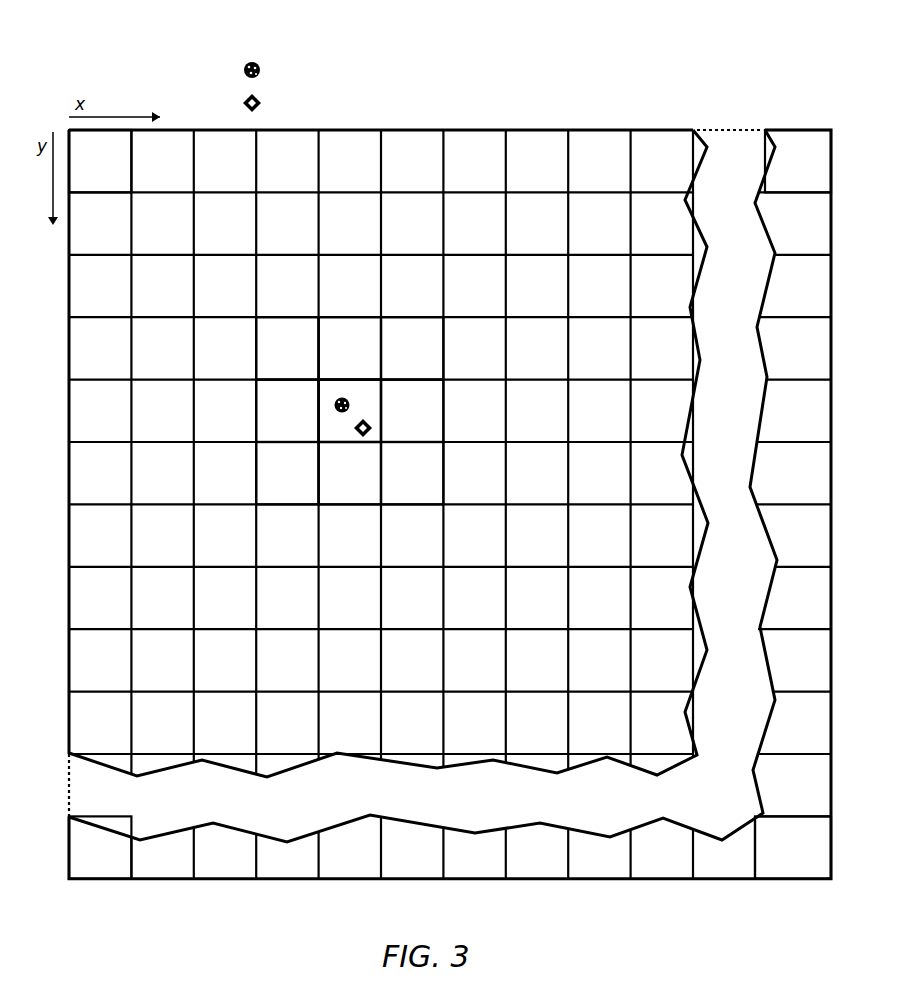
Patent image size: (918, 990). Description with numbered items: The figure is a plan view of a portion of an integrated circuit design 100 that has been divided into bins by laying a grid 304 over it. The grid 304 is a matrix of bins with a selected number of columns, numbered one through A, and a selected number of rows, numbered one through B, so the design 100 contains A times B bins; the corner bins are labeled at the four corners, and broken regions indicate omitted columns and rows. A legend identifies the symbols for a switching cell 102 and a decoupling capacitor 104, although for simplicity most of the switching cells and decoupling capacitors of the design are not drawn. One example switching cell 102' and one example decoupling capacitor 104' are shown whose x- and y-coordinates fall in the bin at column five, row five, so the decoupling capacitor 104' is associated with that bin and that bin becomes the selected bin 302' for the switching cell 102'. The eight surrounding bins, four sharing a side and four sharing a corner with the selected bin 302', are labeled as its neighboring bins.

The design 100 is at (672, 98).
The switching cell 102 is at (275, 70).
The decoupling capacitor 104 is at (274, 104).
The grid 304 is at (410, 128).
The selected bin 302' is at (350, 430).
The switching cell 102' is at (308, 397).
The decoupling capacitor 104' is at (397, 423).